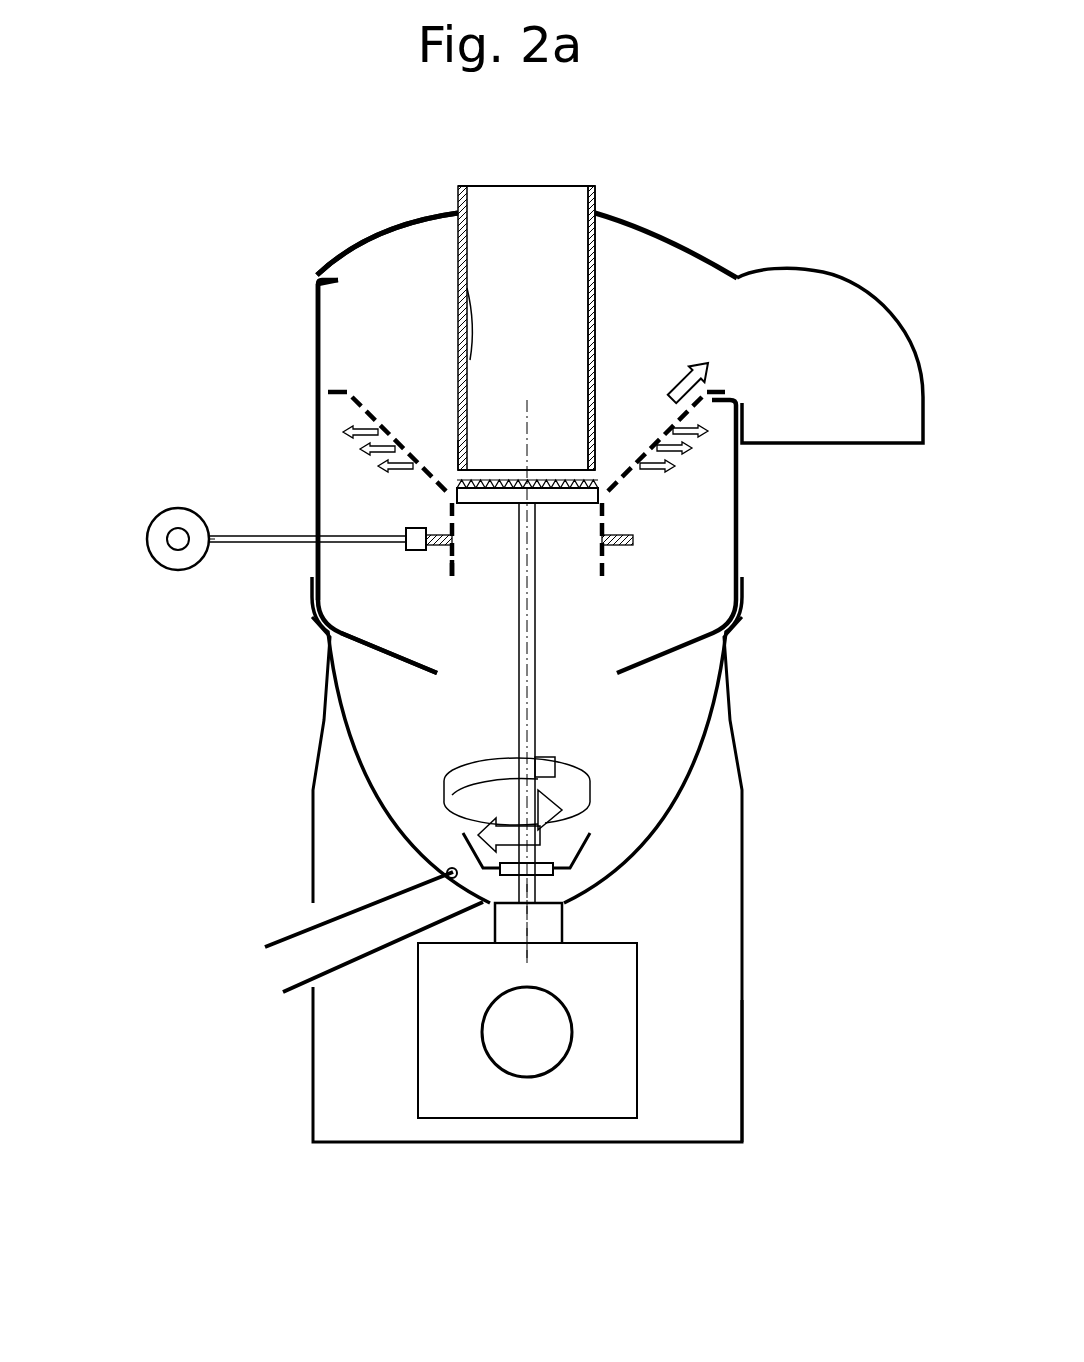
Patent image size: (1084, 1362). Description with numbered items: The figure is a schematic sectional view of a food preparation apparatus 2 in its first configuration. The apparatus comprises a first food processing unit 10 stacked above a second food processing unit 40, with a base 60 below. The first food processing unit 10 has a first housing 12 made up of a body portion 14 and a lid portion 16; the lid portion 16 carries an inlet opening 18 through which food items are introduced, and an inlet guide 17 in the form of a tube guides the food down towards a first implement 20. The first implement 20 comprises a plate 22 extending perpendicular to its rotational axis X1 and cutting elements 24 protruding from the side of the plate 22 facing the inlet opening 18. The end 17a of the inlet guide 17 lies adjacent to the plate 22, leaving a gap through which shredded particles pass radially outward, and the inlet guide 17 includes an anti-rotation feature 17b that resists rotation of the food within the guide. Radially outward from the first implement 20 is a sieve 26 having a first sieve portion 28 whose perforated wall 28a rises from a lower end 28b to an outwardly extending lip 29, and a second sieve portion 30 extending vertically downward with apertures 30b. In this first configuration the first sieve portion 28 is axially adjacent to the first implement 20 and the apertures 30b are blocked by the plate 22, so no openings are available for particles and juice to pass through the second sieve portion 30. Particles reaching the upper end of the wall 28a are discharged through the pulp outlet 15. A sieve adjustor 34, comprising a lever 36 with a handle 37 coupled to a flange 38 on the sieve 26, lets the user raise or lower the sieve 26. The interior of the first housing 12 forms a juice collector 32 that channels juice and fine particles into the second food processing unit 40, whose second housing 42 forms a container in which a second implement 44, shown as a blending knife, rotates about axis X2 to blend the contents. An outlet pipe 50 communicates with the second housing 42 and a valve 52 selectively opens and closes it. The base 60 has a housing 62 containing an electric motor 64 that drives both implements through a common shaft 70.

The food preparation apparatus 2 is at (730, 192).
The first food processing unit 10 is at (240, 263).
The first housing 12 is at (315, 443).
The body portion 14 is at (315, 375).
The pulp outlet 15 is at (873, 297).
The lid portion 16 is at (441, 212).
The inlet guide 17 is at (597, 248).
The end of the inlet guide 17a is at (455, 478).
The anti-rotation feature 17b is at (470, 323).
The inlet opening 18 is at (559, 186).
The first implement 20 is at (490, 495).
The plate 22 is at (567, 502).
The cutting elements 24 is at (603, 490).
The sieve 26 is at (365, 414).
The first sieve portion 28 is at (447, 482).
The wall 28a is at (612, 484).
The lower end 28b is at (600, 497).
The lip 29 is at (339, 390).
The second sieve portion 30 is at (447, 555).
The apertures 30b is at (448, 570).
The juice collector 32 is at (400, 637).
The sieve adjustor 34 is at (153, 455).
The lever 36 is at (220, 547).
The handle 37 is at (148, 533).
The flange 38 is at (431, 533).
The second food processing unit 40 is at (808, 770).
The second housing 42 is at (316, 748).
The second implement 44 is at (600, 848).
The outlet pipe 50 is at (283, 947).
The valve 52 is at (447, 878).
The base 60 is at (744, 968).
The housing of the base 62 is at (745, 1048).
The electric motor 64 is at (492, 1107).
The common shaft 70 is at (528, 712).
The rotational axis of the first implement X1 is at (527, 405).
The axis of rotation of the second implement X2 is at (527, 935).